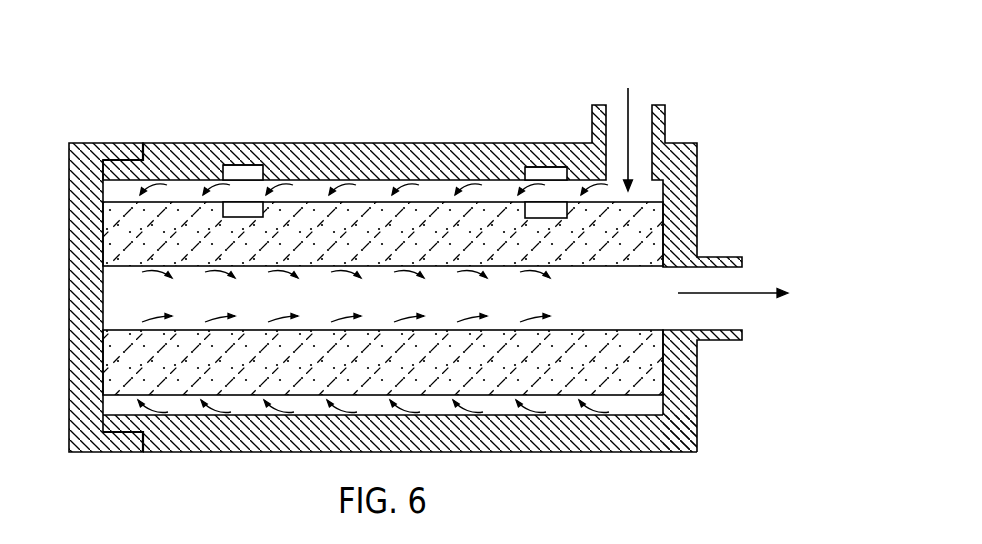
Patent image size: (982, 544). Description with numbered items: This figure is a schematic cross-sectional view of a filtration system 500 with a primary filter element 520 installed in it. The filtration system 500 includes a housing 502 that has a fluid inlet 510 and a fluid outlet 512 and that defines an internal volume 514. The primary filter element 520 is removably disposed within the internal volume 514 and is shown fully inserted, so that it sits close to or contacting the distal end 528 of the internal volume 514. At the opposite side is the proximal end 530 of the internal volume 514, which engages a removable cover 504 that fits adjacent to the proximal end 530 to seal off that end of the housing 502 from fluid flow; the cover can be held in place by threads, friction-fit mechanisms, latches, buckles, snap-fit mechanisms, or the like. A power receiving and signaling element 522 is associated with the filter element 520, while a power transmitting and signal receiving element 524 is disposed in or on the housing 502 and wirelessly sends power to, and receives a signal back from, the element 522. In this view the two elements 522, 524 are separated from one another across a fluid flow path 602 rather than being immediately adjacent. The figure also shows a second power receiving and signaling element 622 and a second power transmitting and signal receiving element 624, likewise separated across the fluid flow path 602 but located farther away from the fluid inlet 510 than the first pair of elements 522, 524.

The filtration system 500 is at (557, 70).
The housing 502 is at (292, 155).
The removable cover 504 is at (74, 143).
The fluid inlet 510 is at (641, 112).
The fluid outlet 512 is at (728, 314).
The internal volume 514 is at (382, 188).
The primary filter element 520 is at (645, 213).
The power receiving and signaling element 522 is at (558, 210).
The power transmitting and signal receiving element 524 is at (530, 158).
The distal end 528 is at (663, 262).
The proximal end 530 is at (99, 143).
The fluid flow path 602 is at (439, 188).
The second power receiving and signaling element 622 is at (253, 210).
The second power transmitting and signal receiving element 624 is at (226, 150).